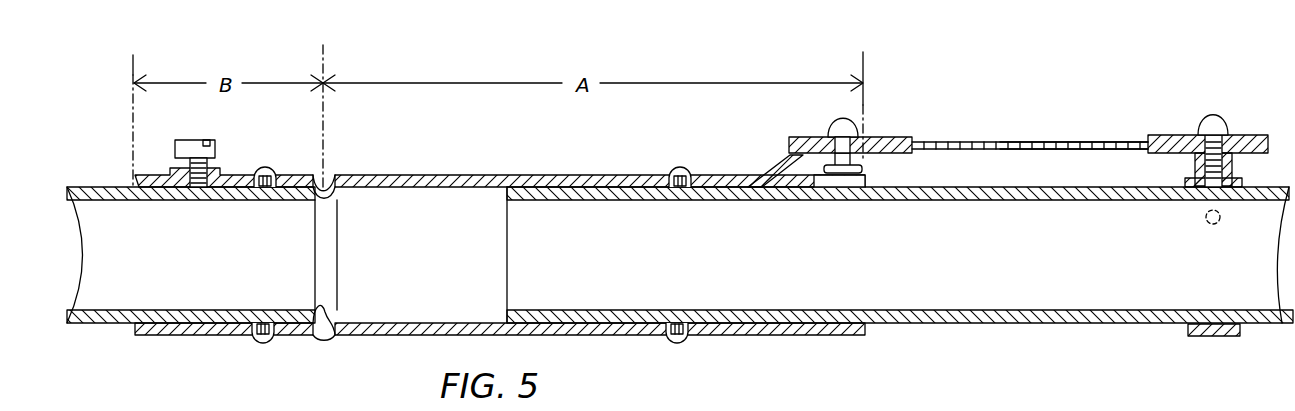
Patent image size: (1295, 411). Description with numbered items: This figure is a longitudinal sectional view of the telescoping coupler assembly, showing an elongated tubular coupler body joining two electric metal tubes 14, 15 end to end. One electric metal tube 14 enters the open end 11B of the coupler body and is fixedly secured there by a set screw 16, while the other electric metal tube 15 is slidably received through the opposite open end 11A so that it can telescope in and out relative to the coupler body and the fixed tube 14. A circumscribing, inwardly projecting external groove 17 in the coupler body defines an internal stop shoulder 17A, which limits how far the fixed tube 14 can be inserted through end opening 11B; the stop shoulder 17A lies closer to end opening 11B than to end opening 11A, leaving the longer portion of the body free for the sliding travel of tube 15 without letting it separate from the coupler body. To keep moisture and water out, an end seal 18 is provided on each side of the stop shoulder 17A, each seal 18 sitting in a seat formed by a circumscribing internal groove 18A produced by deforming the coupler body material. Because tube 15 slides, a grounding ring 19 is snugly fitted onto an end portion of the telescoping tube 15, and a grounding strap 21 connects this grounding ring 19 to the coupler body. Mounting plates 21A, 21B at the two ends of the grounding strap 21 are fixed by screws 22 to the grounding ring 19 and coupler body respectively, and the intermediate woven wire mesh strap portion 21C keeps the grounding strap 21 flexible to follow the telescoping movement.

The electric metal tube 14 is at (110, 186).
The electric metal tube 15 is at (1090, 324).
The set screw 16 is at (195, 138).
The external groove 17 is at (330, 178).
The internal stop shoulder 17A is at (320, 332).
The end seal 18 is at (270, 178).
The internal groove 18A is at (258, 170).
The open end 11A is at (865, 330).
The open end 11B is at (135, 336).
The grounding ring 19 is at (1213, 338).
The grounding strap 21 is at (990, 132).
The mounting plate 21A is at (1250, 133).
The mounting plate 21B is at (882, 137).
The woven wire mesh strap portion 21C is at (1078, 140).
The screw 22 is at (830, 116).